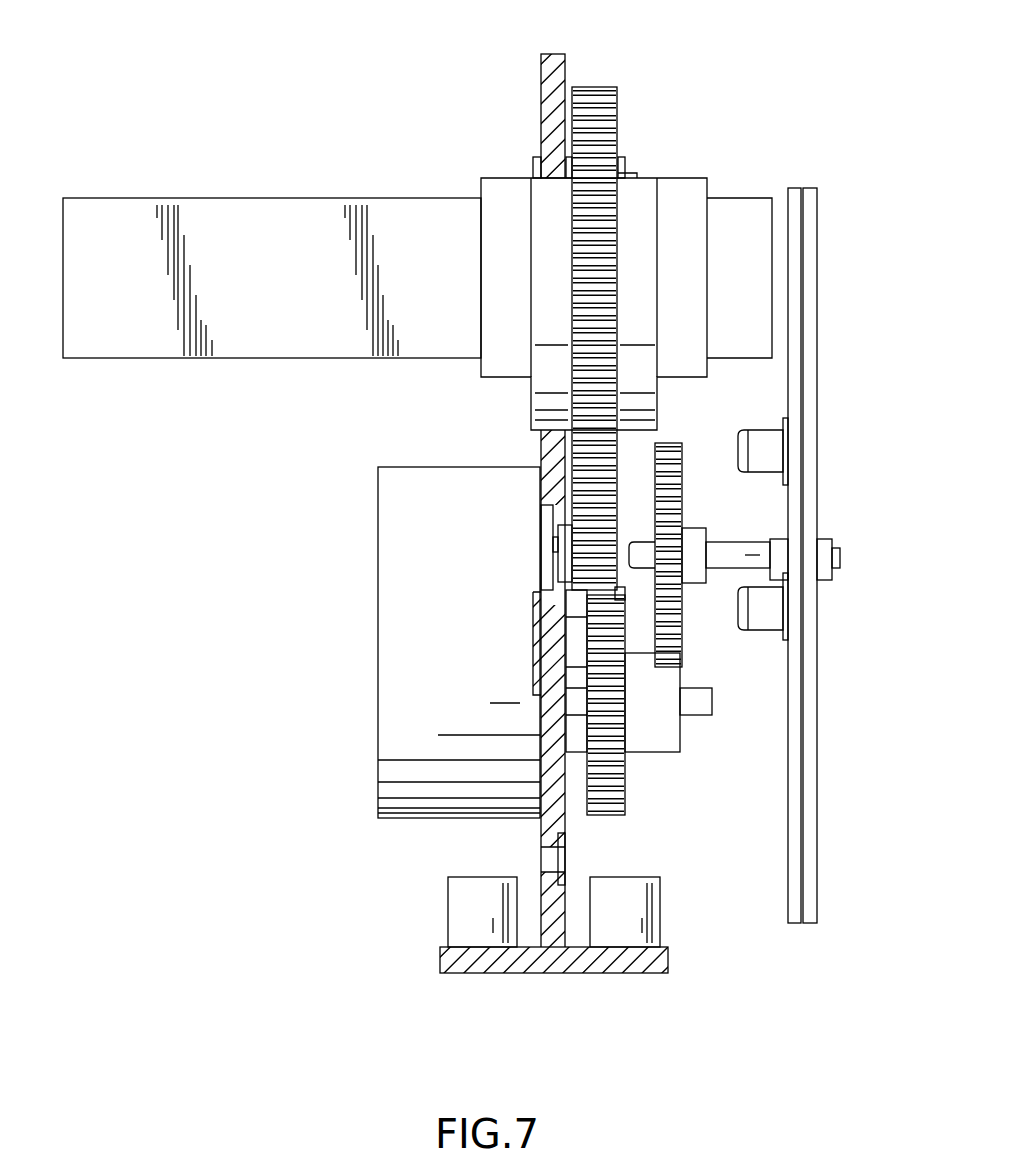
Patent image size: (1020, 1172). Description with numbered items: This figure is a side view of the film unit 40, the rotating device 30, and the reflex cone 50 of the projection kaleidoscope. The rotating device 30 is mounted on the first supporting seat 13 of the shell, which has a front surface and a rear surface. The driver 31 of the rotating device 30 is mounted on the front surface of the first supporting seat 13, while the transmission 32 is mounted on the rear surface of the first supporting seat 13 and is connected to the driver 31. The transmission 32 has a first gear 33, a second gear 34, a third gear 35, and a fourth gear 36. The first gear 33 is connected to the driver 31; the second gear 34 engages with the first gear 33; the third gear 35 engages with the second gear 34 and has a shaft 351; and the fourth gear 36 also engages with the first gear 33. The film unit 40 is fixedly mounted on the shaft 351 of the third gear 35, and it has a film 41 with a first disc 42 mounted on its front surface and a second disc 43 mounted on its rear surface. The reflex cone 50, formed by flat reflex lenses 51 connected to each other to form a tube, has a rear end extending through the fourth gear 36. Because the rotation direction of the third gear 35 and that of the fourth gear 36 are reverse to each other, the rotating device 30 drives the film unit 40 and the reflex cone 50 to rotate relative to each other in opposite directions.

The first supporting seat 13 is at (552, 960).
The rotating device 30 is at (421, 642).
The driver 31 is at (410, 702).
The transmission 32 is at (638, 110).
The first gear 33 is at (583, 583).
The second gear 34 is at (626, 788).
The third gear 35 is at (672, 470).
The shaft 351 is at (748, 547).
The fourth gear 36 is at (594, 88).
The film unit 40 is at (799, 622).
The film 41 is at (808, 590).
The first disc 42 is at (790, 907).
The second disc 43 is at (811, 897).
The reflex cone 50 is at (340, 186).
The flat reflex lenses 51 is at (266, 228).